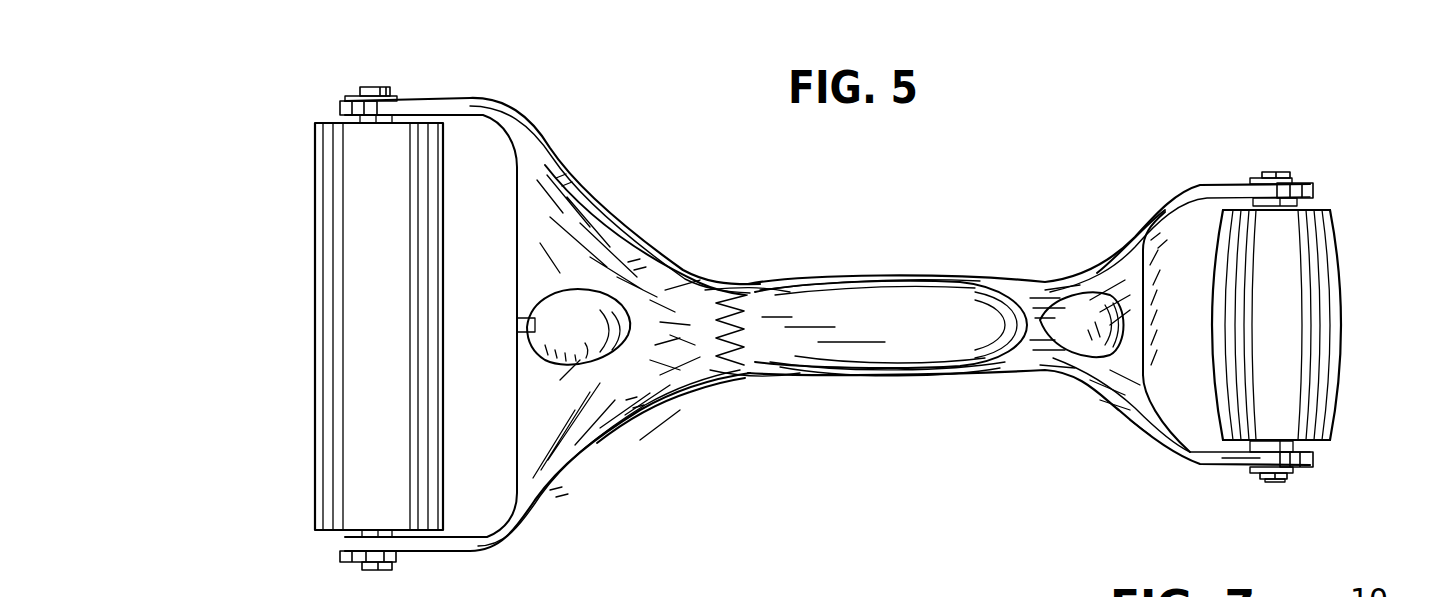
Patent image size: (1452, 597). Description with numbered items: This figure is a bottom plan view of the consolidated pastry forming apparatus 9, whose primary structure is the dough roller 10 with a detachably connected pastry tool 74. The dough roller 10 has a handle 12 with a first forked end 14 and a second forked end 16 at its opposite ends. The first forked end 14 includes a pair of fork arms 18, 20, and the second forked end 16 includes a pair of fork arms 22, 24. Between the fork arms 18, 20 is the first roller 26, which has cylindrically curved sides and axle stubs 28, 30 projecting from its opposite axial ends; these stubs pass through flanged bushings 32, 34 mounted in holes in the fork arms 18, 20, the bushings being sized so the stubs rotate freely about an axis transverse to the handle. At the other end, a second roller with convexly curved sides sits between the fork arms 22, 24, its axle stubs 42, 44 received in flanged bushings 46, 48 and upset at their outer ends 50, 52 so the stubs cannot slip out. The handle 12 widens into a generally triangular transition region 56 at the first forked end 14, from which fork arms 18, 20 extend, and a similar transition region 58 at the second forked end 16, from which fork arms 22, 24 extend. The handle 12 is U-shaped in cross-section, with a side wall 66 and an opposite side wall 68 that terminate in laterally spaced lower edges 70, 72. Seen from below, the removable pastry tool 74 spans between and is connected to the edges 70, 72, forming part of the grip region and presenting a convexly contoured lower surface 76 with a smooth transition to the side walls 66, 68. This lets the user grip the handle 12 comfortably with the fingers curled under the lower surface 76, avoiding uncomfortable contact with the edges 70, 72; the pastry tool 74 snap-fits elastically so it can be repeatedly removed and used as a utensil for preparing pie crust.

The consolidated pastry forming apparatus 9 is at (800, 192).
The dough roller 10 is at (955, 146).
The handle 12 is at (700, 279).
The first forked end 14 is at (568, 134).
The second forked end 16 is at (1120, 440).
The fork arm 18 is at (462, 553).
The fork arm 20 is at (457, 97).
The fork arm 22 is at (1225, 468).
The fork arm 24 is at (1205, 185).
The first roller 26 is at (315, 298).
The axle stub 28 is at (363, 537).
The axle stub 30 is at (355, 119).
The flanged bushing 32 is at (352, 565).
The flanged bushing 34 is at (352, 93).
The axle stub 42 is at (1310, 445).
The axle stub 44 is at (1310, 200).
The flanged bushing 46 is at (1300, 478).
The flanged bushing 48 is at (1300, 180).
The outer end 50 is at (1277, 480).
The outer end 52 is at (1272, 172).
The transition region 56 is at (558, 413).
The transition region 58 is at (1120, 287).
The side wall 66 is at (920, 380).
The side wall 68 is at (940, 277).
The lower edge 70 is at (693, 378).
The lower edge 72 is at (1023, 283).
The pastry tool 74 is at (873, 302).
The lower surface 76 is at (930, 330).